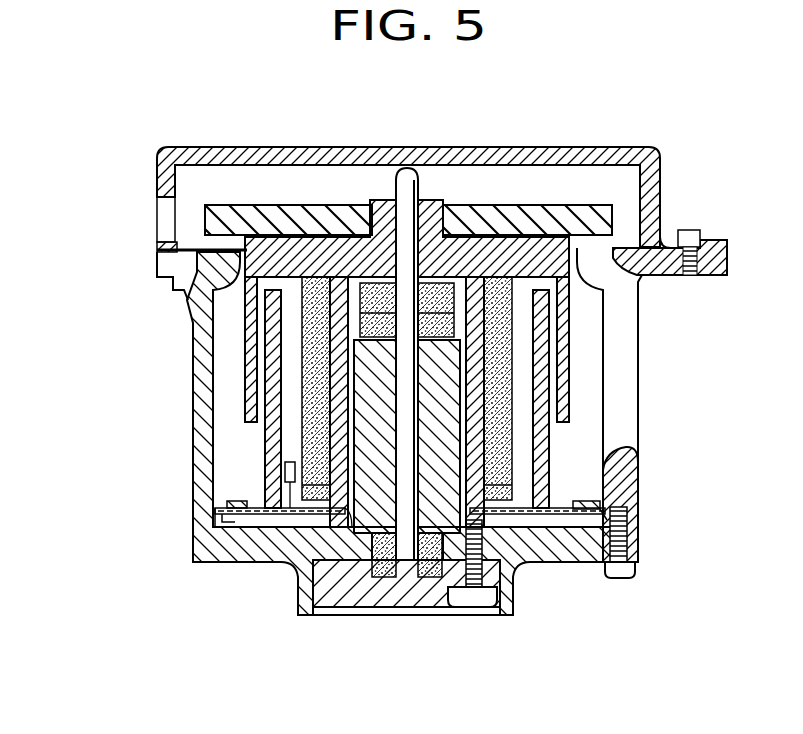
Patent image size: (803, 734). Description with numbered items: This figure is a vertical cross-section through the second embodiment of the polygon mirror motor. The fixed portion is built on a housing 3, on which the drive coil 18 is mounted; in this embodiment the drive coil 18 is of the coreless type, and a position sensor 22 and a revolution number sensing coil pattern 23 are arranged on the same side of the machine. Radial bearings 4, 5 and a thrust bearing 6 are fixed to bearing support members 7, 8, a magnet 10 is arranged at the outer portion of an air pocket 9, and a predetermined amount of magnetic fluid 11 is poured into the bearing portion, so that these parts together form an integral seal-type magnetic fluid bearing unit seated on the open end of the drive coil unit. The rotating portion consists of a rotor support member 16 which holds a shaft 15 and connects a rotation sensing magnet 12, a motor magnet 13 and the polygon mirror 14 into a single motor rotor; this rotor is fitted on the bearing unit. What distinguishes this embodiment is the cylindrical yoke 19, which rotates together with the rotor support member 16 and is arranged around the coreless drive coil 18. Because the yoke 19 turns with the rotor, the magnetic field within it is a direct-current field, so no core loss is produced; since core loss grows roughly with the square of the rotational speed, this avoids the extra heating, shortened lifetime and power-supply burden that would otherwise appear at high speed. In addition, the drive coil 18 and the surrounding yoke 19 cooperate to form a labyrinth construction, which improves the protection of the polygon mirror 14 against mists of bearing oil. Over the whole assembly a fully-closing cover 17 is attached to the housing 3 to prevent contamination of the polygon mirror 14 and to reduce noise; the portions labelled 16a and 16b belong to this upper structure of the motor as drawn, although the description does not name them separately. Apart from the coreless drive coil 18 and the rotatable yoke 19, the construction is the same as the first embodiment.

The housing 3 is at (197, 503).
The radial bearing 4 is at (384, 300).
The radial bearing 5 is at (527, 562).
The thrust bearing 6 is at (423, 566).
The bearing support member 7 is at (300, 568).
The bearing support member 8 is at (373, 602).
The air pocket 9 is at (527, 240).
The magnet 10 is at (451, 280).
The magnetic fluid 11 is at (539, 222).
The rotation sensing magnet 12 is at (550, 486).
The motor magnet 13 is at (513, 445).
The polygon mirror 14 is at (247, 206).
The shaft 15 is at (406, 168).
The rotor support member 16 is at (267, 232).
The cover central portion 16a is at (441, 200).
The cover flange 16b is at (197, 243).
The fully-closing cover 17 is at (433, 147).
The drive coil 18 is at (548, 430).
The cylindrical yoke 19 is at (567, 337).
The position sensor 22 is at (277, 512).
The revolution number sensing coil pattern 23 is at (212, 562).